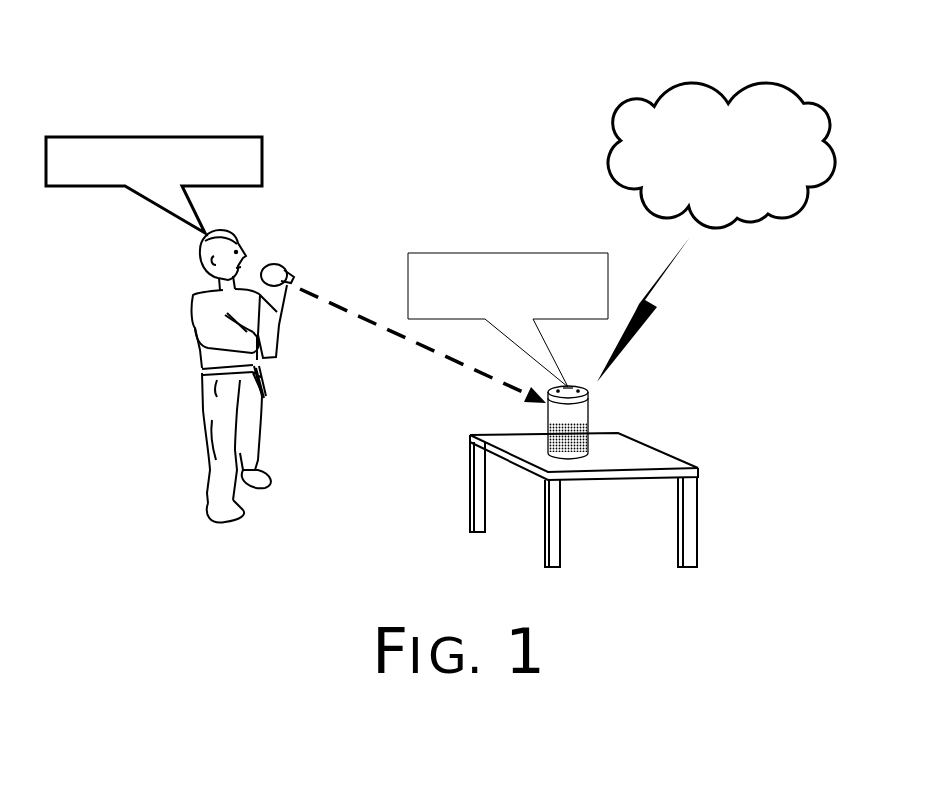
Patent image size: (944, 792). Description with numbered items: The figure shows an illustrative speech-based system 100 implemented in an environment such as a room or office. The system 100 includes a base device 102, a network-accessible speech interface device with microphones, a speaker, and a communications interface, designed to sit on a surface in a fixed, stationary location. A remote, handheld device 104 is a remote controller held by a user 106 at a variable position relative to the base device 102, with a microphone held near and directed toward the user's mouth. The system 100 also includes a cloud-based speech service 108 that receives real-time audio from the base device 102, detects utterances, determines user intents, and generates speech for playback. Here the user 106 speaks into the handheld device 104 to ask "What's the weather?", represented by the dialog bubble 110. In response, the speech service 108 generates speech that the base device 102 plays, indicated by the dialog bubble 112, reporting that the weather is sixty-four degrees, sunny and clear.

The speech-based system 100 is at (206, 86).
The base device 102 is at (582, 412).
The handheld device 104 is at (268, 267).
The user 106 is at (207, 302).
The speech service 108 is at (788, 105).
The dialog bubble 110 is at (254, 143).
The dialog bubble 112 is at (526, 259).